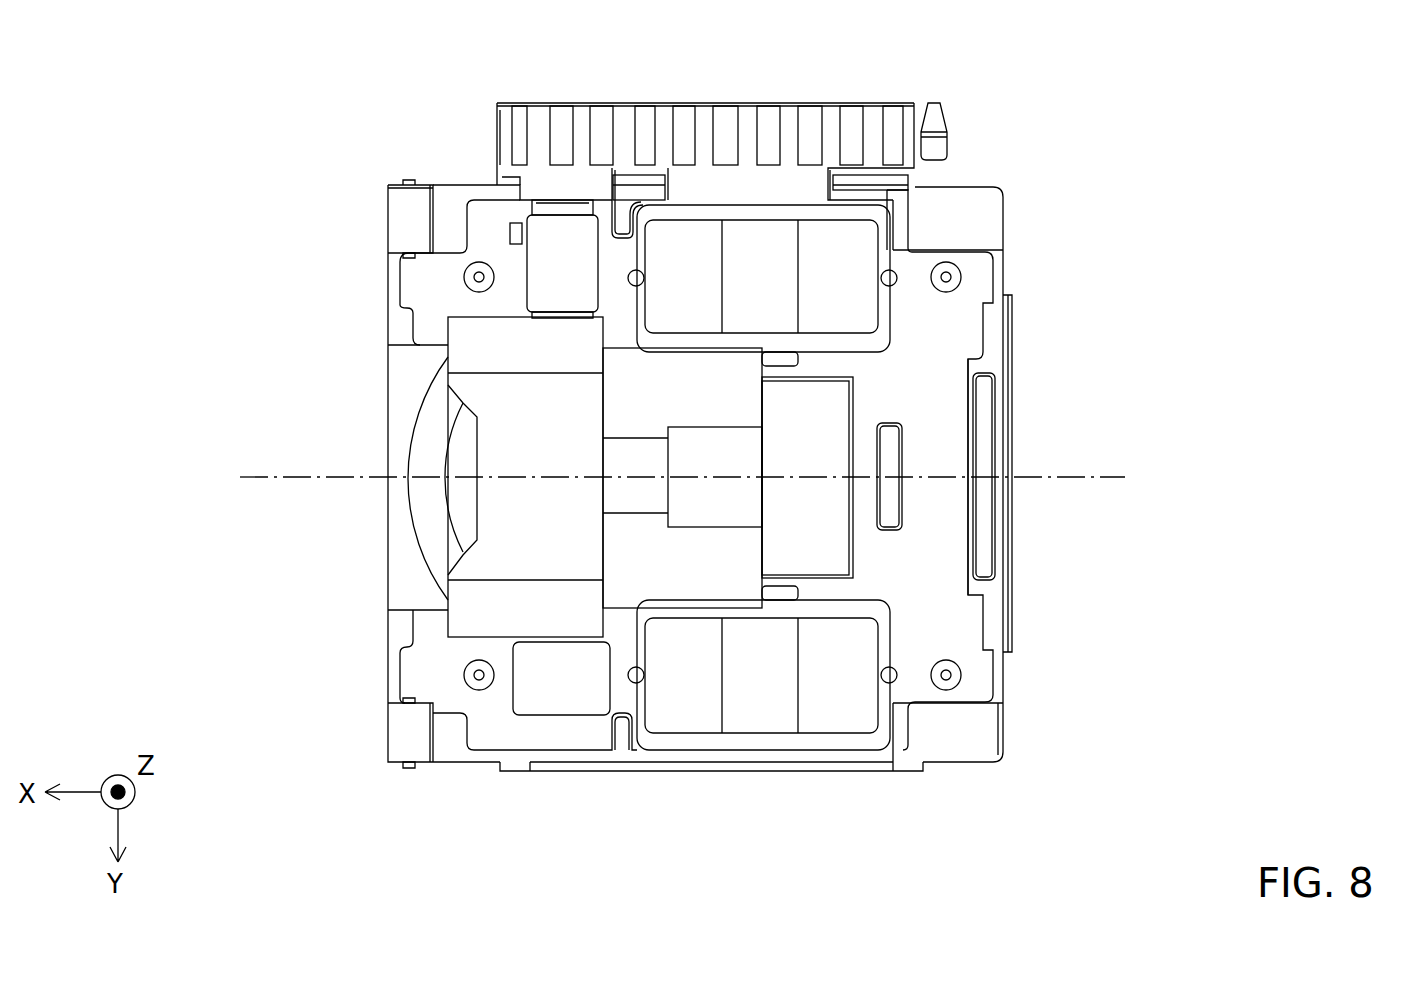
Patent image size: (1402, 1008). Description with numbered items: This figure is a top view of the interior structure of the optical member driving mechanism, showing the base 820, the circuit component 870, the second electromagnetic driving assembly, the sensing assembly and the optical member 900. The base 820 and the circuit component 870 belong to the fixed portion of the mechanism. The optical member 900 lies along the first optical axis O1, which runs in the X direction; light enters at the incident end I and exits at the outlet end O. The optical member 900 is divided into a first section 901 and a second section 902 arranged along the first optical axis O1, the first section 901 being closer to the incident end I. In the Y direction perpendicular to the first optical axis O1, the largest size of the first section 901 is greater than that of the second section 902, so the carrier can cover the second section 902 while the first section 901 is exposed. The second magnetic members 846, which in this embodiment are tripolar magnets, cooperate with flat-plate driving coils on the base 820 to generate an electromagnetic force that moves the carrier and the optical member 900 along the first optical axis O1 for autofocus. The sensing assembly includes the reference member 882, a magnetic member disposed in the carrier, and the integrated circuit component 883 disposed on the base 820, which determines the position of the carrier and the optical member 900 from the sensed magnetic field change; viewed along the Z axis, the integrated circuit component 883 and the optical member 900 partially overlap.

The circuit component 870 is at (662, 140).
The integrated circuit component 883 is at (553, 210).
The second magnetic members 846 is at (765, 262).
The base 820 is at (415, 222).
The reference member 882 is at (562, 680).
The first section 901 is at (510, 447).
The second section 902 is at (710, 548).
The optical member 900 is at (435, 527).
The incident end I is at (424, 402).
The outlet end O is at (762, 398).
The first optical axis O1 is at (658, 477).